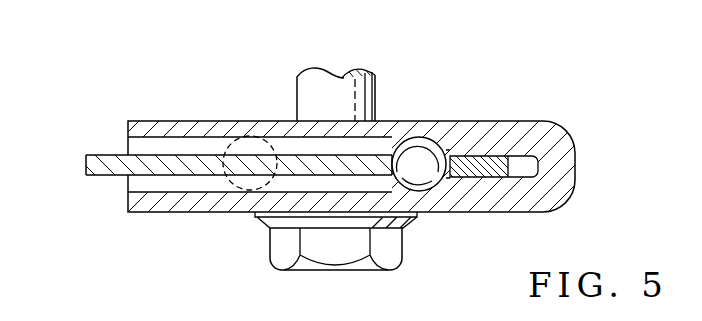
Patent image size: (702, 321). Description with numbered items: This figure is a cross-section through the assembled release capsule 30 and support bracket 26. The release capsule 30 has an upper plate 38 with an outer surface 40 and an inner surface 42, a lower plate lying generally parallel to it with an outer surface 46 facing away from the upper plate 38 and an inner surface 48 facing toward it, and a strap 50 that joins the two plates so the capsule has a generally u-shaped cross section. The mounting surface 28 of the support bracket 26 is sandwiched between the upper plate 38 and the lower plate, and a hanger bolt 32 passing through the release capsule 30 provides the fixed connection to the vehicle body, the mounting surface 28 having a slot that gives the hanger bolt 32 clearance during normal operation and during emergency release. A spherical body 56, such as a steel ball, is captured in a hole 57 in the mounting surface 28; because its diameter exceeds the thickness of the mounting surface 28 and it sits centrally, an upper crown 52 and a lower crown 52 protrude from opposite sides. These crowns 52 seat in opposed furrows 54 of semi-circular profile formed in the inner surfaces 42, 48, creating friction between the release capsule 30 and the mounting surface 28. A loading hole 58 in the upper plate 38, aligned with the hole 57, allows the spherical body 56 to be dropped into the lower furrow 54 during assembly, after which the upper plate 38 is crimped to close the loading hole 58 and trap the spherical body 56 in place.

The support bracket 26 is at (87, 158).
The mounting surface 28 is at (175, 156).
The release capsule 30 is at (573, 129).
The hanger bolt 32 is at (376, 85).
The upper plate 38 is at (150, 128).
The outer surface 40 is at (251, 120).
The inner surface 42 is at (214, 152).
The outer surface 46 is at (474, 213).
The inner surface 48 is at (158, 169).
The strap 50 is at (575, 163).
The crown 52 is at (421, 137).
The furrow 54 is at (135, 141).
The spherical body 56 is at (418, 176).
The hole 57 is at (452, 146).
The loading hole 58 is at (413, 122).